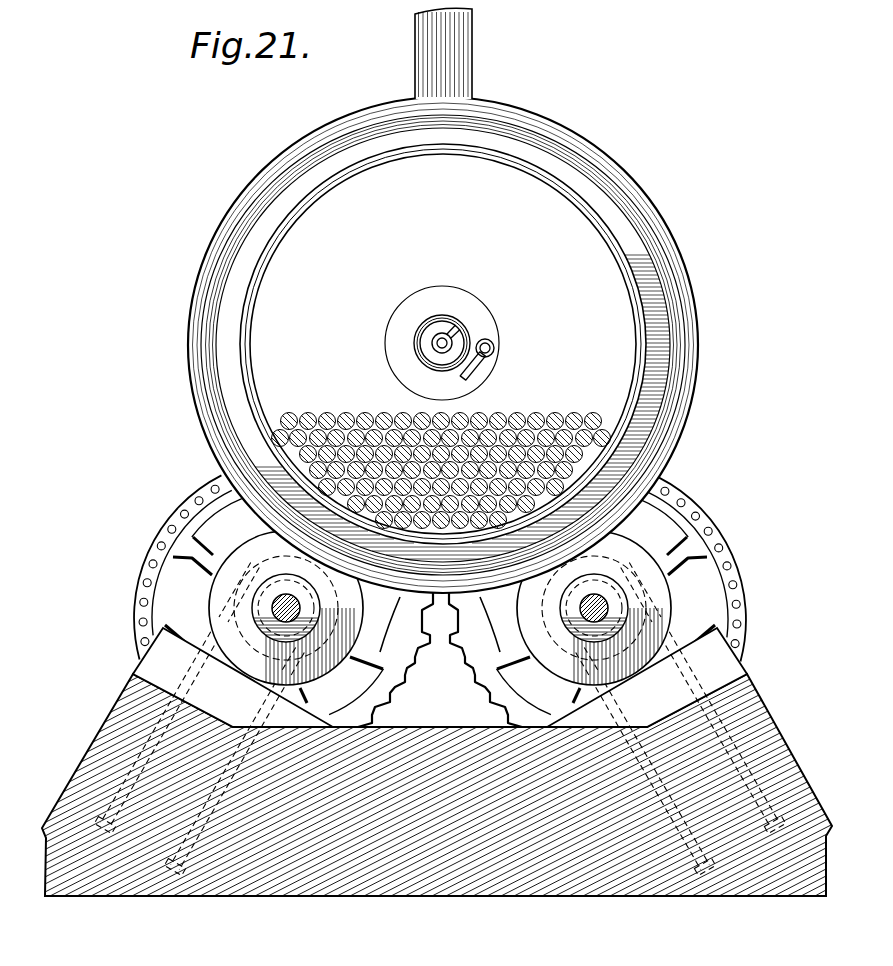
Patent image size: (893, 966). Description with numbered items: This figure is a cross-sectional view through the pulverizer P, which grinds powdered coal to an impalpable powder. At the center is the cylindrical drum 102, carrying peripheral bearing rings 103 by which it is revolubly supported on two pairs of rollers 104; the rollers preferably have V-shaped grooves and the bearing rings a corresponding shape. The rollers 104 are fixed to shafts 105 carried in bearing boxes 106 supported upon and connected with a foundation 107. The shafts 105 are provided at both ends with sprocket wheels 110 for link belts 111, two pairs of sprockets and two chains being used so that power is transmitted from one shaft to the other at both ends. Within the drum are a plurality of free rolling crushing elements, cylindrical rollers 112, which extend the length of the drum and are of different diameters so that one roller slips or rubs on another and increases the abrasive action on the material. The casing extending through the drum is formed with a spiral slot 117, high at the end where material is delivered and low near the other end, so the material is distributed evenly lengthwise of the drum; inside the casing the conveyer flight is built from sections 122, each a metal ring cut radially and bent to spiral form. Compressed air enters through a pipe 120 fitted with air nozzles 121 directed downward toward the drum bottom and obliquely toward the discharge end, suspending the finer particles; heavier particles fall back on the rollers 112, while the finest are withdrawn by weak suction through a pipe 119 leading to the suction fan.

The pulverizer P is at (575, 173).
The cylindrical drum 102 is at (614, 237).
The peripheral bearing rings 103 is at (680, 292).
The rollers 104 is at (236, 555).
The shafts 105 is at (271, 612).
The bearing boxes 106 is at (266, 587).
The foundation 107 is at (423, 735).
The sprocket wheels 110 is at (713, 562).
The link belts 111 is at (712, 524).
The cylindrical rollers 112 is at (531, 418).
The spiral slot 117 is at (413, 346).
The pipe 119 is at (462, 78).
The pipe 120 is at (490, 341).
The air nozzles 121 is at (478, 369).
The section 122 is at (437, 330).